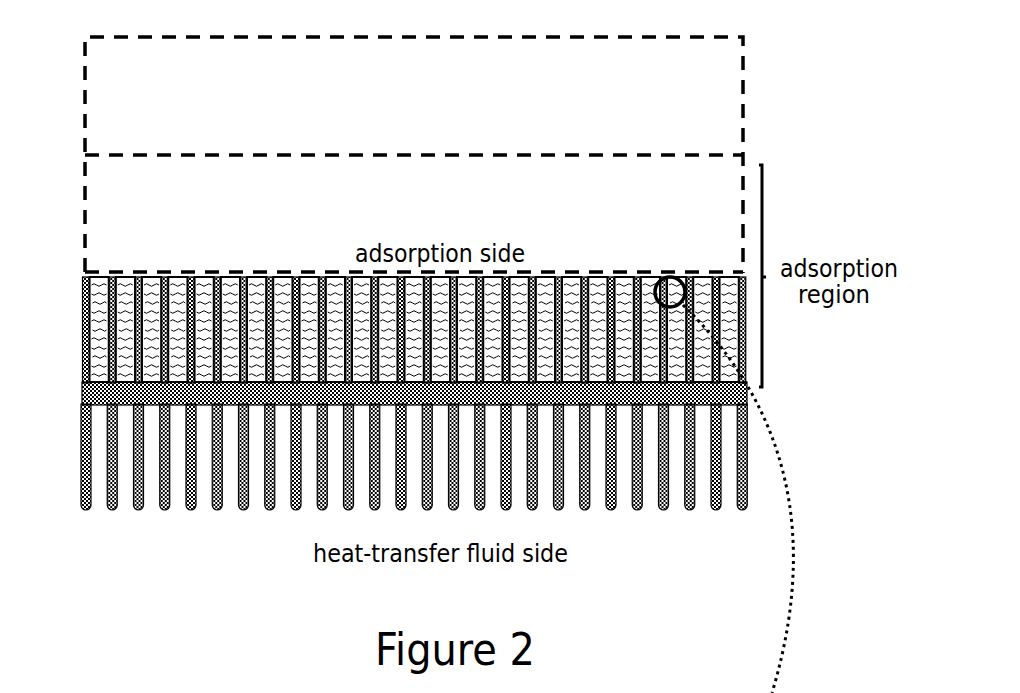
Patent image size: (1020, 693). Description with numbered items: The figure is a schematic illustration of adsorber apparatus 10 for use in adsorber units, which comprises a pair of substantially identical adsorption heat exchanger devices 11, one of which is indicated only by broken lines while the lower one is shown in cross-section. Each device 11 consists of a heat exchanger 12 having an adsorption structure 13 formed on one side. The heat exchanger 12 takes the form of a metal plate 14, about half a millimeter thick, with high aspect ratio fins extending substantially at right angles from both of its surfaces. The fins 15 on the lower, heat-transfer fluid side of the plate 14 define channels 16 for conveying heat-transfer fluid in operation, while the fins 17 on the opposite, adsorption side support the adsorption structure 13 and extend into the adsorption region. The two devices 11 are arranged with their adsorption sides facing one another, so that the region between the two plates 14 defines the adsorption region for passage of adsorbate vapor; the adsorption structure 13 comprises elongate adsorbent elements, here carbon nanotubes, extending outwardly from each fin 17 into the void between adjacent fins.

The adsorber apparatus 10 is at (823, 49).
The adsorption heat exchanger device 11 is at (85, 242).
The heat exchanger 12 is at (267, 398).
The adsorption structure 13 is at (260, 353).
The metal plate 14 is at (96, 393).
The fins on HTF side 15 is at (173, 512).
The channels 16 is at (697, 512).
The fins on adsorption side 17 is at (170, 272).